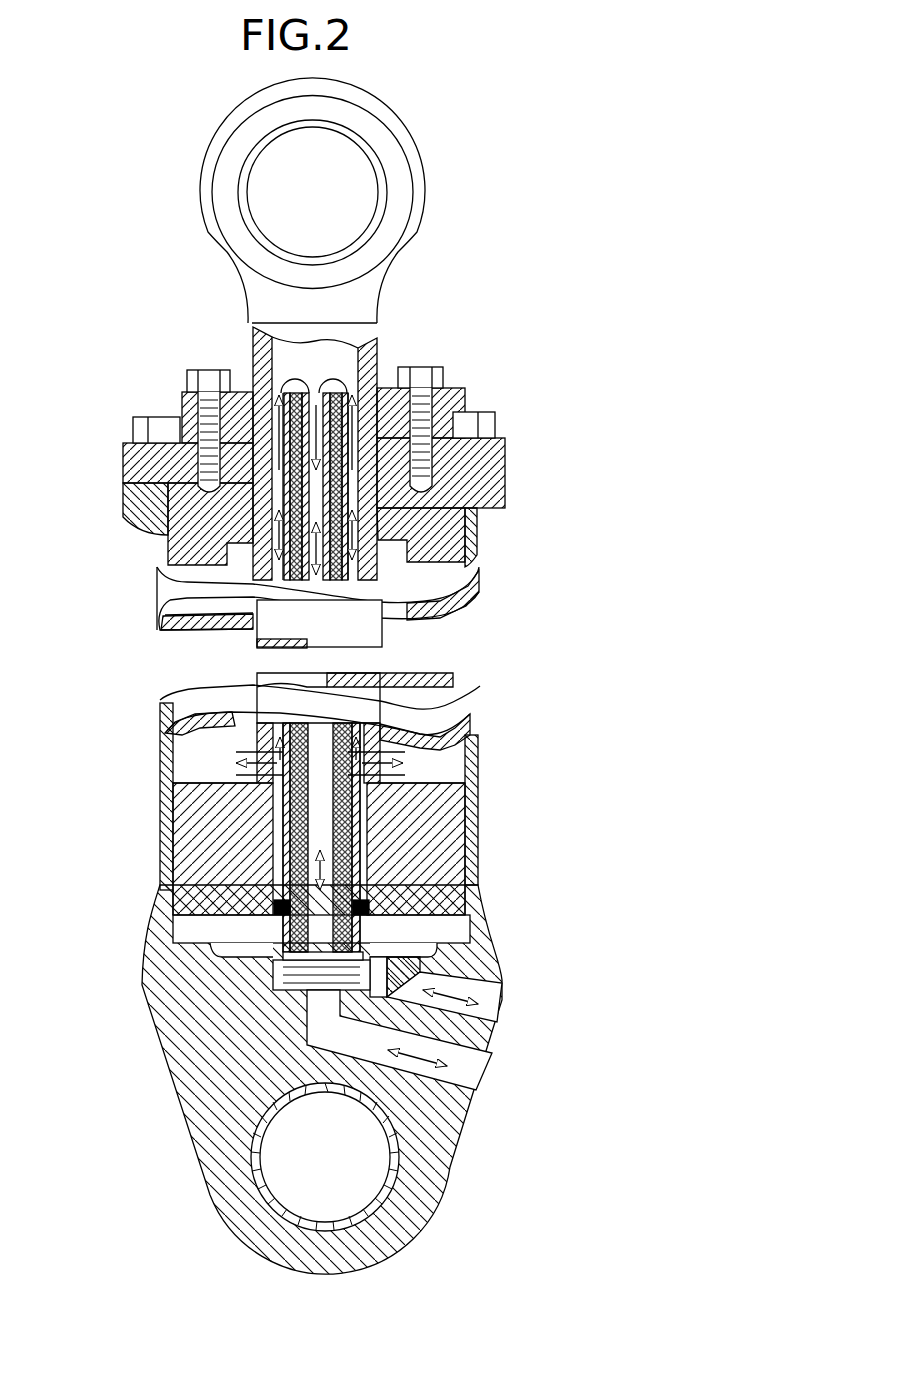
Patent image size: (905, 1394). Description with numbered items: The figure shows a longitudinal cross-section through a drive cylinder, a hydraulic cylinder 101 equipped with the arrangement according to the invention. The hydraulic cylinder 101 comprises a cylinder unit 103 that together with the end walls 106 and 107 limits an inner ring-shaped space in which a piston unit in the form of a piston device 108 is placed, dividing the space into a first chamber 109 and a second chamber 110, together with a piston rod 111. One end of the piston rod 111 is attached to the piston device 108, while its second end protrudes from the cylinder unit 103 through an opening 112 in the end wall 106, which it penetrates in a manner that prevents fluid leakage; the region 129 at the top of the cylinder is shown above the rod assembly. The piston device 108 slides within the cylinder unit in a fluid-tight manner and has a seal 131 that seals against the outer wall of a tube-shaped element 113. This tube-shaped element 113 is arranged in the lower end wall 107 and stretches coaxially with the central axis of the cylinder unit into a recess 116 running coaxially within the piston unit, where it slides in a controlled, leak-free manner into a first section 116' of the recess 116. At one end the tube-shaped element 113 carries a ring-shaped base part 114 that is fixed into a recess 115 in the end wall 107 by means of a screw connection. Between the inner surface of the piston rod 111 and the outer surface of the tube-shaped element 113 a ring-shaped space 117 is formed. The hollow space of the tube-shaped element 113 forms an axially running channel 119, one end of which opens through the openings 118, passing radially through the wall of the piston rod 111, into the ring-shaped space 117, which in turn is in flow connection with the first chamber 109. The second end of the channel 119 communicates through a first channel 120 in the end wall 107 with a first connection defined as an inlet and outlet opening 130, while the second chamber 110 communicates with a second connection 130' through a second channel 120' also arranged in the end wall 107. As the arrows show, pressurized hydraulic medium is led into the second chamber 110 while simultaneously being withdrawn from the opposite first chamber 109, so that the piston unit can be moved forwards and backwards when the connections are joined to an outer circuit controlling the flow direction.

The hydraulic cylinder 101 is at (557, 247).
The fluid reservoir at top of cylinder 129 is at (377, 343).
The opening 112 is at (382, 370).
The recess 116 is at (265, 453).
The end wall 106 is at (470, 463).
The ring-shaped space 117 is at (283, 480).
The cylinder unit 103 is at (462, 598).
The piston rod 111 is at (363, 637).
The tube-shaped element 113 is at (287, 650).
The first chamber 109 is at (207, 740).
The openings 118 is at (385, 750).
The piston device 108 is at (220, 853).
The first section of the recess 116' is at (433, 837).
The seal 131 is at (370, 905).
The second chamber 110 is at (440, 930).
The channel 119 is at (322, 933).
The recess 115 is at (380, 967).
The ring-shaped base part 114 is at (273, 976).
The second channel 120' is at (501, 991).
The second connection 130' is at (510, 1005).
The end wall 107 is at (217, 1062).
The inlet and outlet opening 130 is at (477, 1067).
The first channel 120 is at (293, 1060).